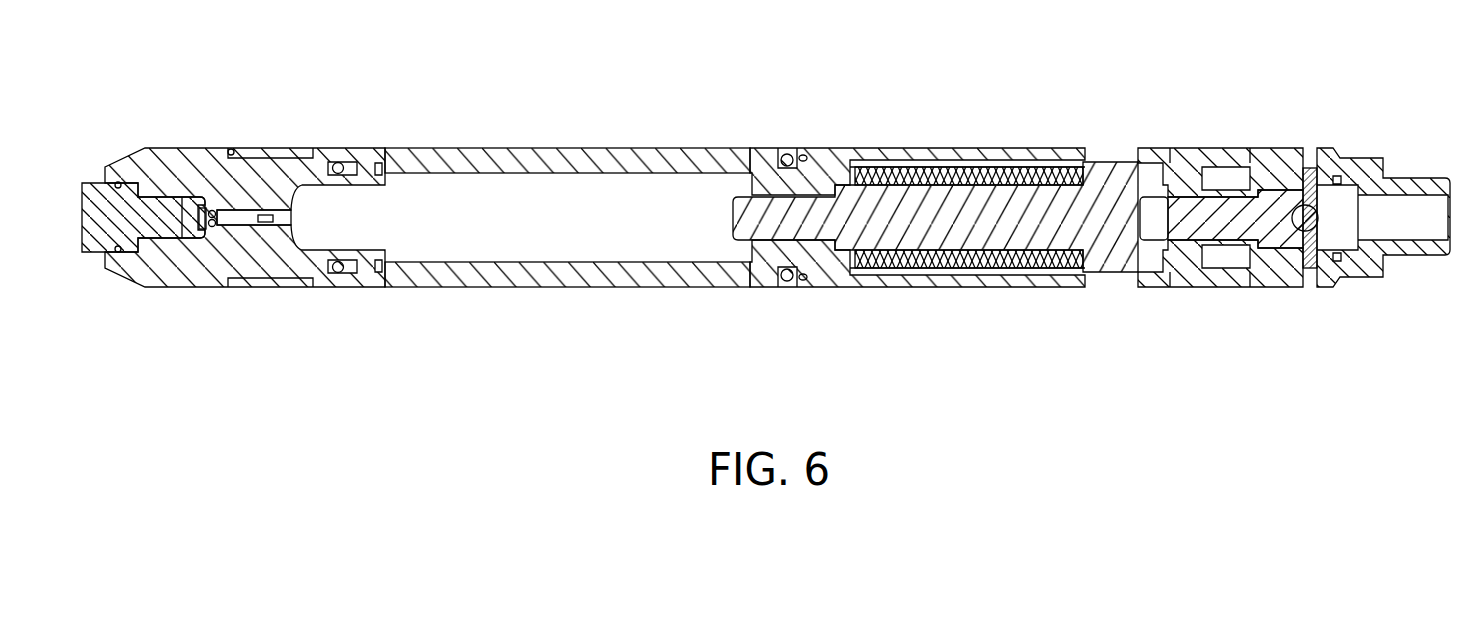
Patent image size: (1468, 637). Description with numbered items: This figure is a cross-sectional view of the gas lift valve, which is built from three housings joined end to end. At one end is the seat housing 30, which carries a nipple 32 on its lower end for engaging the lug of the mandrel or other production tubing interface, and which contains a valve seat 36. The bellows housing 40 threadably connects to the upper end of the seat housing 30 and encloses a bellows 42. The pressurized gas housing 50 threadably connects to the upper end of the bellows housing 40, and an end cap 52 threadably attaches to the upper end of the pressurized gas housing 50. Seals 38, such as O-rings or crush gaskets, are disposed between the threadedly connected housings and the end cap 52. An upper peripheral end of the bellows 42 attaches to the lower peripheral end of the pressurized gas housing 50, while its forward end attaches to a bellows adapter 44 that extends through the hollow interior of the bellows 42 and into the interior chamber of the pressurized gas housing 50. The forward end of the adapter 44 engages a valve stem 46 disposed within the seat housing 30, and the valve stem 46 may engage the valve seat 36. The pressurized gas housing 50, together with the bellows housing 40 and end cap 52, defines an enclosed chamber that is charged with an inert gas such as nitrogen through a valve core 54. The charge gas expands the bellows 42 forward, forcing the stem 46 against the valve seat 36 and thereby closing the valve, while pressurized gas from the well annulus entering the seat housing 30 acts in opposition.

The seat housing 30 is at (1202, 278).
The nipple 32 is at (1282, 292).
The valve seat 36 is at (1345, 190).
The seals 38 is at (338, 163).
The bellows housing 40 is at (948, 152).
The bellows 42 is at (1033, 160).
The bellows adapter 44 is at (1130, 173).
The valve stem 46 is at (1247, 210).
The pressurized gas housing 50 is at (575, 152).
The end cap 52 is at (163, 157).
The valve core 54 is at (228, 224).